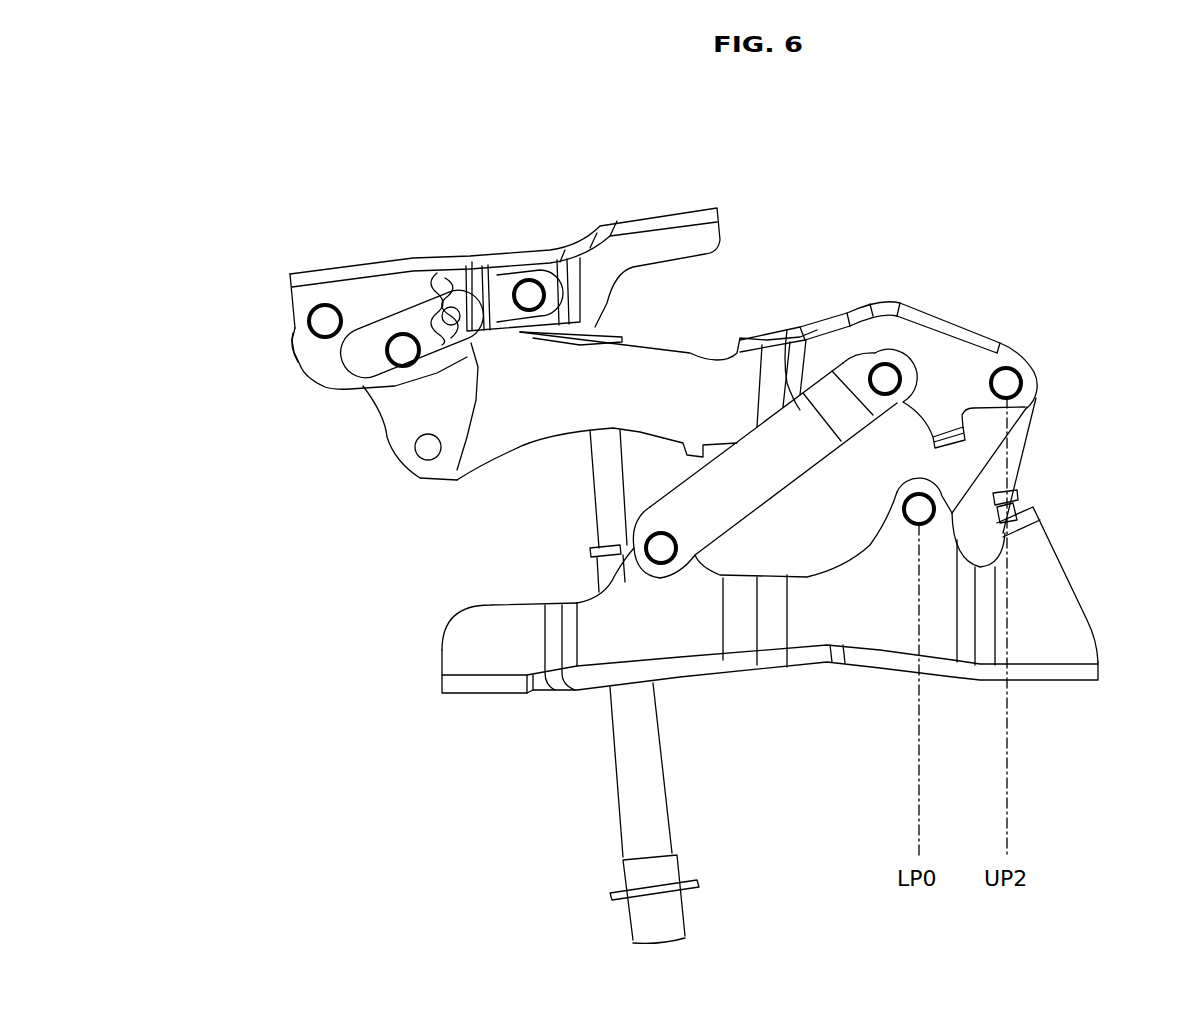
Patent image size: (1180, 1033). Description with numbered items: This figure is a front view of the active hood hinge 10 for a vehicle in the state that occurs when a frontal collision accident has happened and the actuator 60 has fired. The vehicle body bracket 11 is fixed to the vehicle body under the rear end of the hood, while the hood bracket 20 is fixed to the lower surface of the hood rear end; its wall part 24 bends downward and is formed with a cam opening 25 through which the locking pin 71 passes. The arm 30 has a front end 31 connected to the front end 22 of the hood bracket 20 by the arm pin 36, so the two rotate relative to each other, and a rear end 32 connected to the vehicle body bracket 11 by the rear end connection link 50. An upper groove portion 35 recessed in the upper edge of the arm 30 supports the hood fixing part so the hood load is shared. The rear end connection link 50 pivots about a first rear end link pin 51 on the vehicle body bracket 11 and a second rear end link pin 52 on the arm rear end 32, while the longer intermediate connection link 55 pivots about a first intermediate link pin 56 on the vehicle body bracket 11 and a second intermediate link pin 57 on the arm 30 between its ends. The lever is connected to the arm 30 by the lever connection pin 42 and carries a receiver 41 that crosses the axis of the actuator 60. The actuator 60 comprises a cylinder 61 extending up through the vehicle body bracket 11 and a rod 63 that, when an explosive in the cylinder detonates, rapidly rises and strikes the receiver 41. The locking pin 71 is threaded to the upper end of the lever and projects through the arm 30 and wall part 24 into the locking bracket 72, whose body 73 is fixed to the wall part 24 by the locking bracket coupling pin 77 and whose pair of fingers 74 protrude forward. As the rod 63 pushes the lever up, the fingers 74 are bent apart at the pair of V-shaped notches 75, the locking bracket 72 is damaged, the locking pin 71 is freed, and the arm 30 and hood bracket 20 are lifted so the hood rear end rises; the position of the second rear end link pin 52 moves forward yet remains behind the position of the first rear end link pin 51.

The active hood hinge 10 is at (1031, 268).
The vehicle body bracket 11 is at (1088, 619).
The hood bracket 20 is at (650, 212).
The front end of the hood bracket 22 is at (290, 280).
The wall part 24 is at (300, 302).
The cam opening 25 is at (403, 319).
The arm 30 is at (913, 305).
The front end of the arm 31 is at (291, 347).
The rear end of the arm 32 is at (1037, 385).
The upper groove portion 35 is at (693, 350).
The arm pin 36 is at (320, 322).
The receiver 41 is at (600, 337).
The lever connection pin 42 is at (428, 447).
The rear end connection link 50 is at (1013, 443).
The first rear end link pin 51 is at (913, 514).
The second rear end link pin 52 is at (1013, 379).
The intermediate connection link 55 is at (779, 325).
The first intermediate link pin 56 is at (667, 553).
The second intermediate link pin 57 is at (882, 372).
The actuator 60 is at (343, 603).
The cylinder 61 is at (630, 758).
The rod 63 is at (607, 510).
The locking pin 71 is at (403, 350).
The locking bracket 72 is at (507, 268).
The body 73 is at (500, 313).
The pair of fingers 74 is at (433, 270).
The pair of notches 75 is at (453, 277).
The locking bracket coupling pin 77 is at (533, 290).